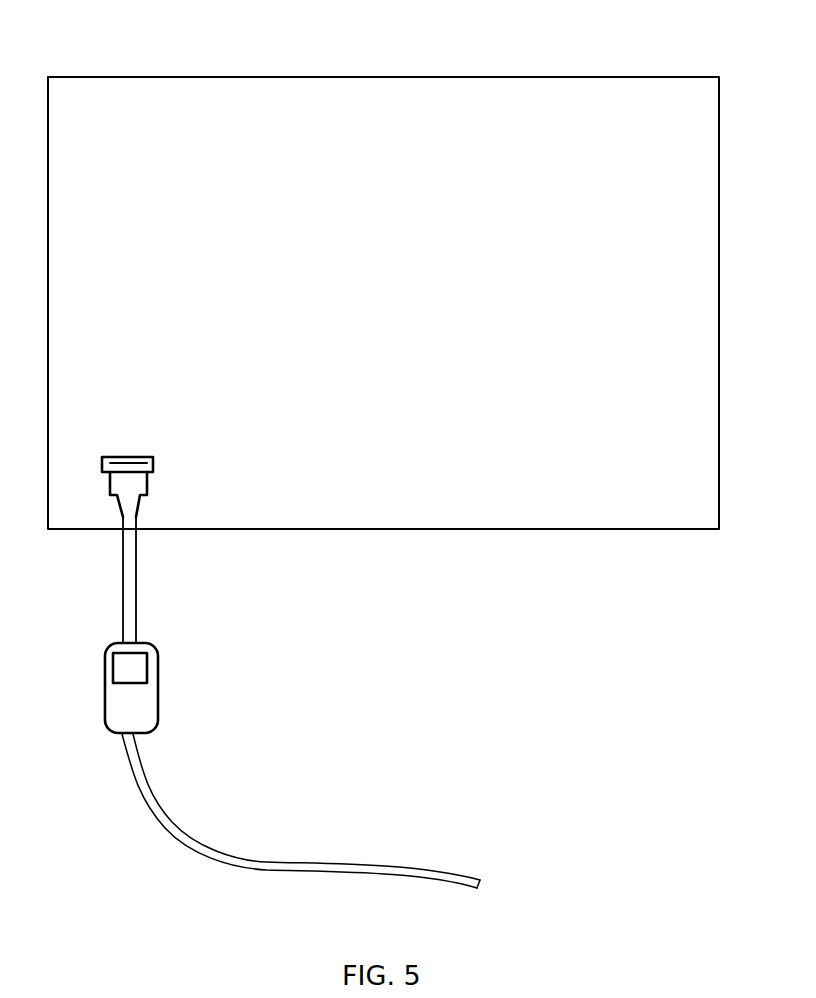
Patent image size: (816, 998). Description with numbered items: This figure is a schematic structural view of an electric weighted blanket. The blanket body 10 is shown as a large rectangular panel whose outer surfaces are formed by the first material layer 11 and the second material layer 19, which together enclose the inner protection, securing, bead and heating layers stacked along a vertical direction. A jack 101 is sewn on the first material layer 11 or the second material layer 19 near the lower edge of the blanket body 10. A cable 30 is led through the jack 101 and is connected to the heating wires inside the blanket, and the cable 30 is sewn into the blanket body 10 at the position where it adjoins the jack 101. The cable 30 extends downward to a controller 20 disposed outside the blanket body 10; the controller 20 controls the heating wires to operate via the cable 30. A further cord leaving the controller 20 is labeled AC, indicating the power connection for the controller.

The blanket body 10 is at (383, 266).
The first material layer 11 is at (383, 285).
The second material layer 19 is at (147, 95).
The jack 101 is at (152, 452).
The cable 30 is at (128, 553).
The controller 20 is at (133, 692).
The AC power cord AC is at (319, 815).